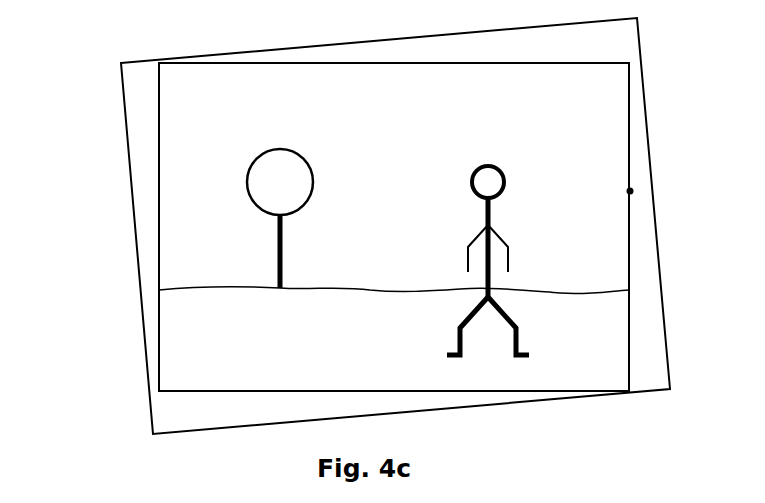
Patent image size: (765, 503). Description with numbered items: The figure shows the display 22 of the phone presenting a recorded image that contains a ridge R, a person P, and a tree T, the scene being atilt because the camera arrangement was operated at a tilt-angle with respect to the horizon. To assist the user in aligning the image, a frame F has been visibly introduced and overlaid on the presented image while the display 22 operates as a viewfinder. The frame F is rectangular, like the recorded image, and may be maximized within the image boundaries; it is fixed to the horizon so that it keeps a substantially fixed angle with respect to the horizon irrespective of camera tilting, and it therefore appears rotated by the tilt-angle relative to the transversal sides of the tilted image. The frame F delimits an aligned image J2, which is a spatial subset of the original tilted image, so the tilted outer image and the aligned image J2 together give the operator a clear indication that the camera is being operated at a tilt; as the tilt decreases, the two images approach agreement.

The display 22 is at (142, 178).
The aligned image J2 is at (168, 116).
The tree T is at (258, 180).
The ridge R is at (337, 289).
The person P is at (478, 180).
The frame F is at (630, 191).